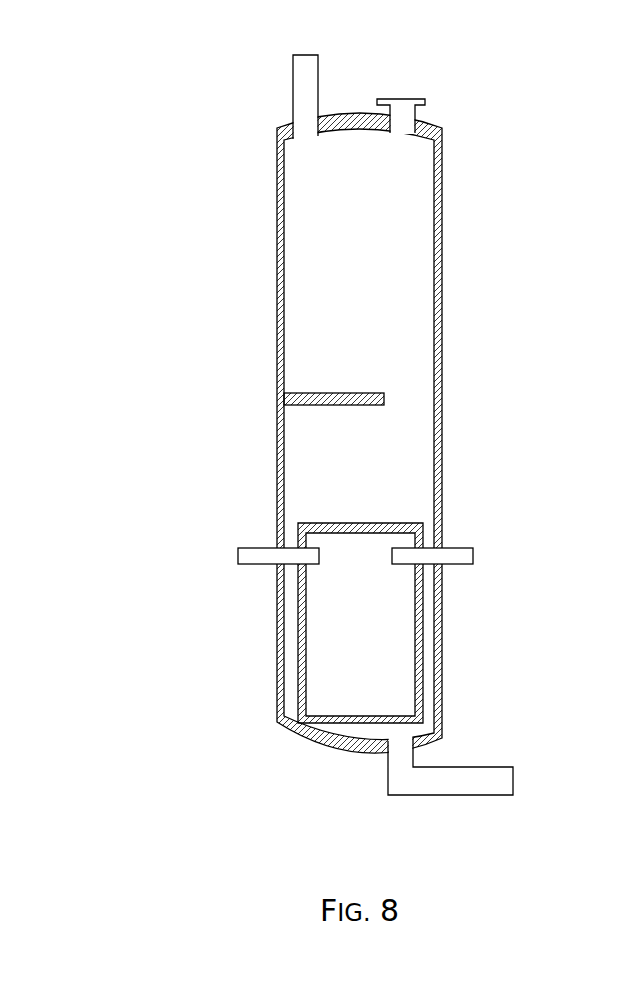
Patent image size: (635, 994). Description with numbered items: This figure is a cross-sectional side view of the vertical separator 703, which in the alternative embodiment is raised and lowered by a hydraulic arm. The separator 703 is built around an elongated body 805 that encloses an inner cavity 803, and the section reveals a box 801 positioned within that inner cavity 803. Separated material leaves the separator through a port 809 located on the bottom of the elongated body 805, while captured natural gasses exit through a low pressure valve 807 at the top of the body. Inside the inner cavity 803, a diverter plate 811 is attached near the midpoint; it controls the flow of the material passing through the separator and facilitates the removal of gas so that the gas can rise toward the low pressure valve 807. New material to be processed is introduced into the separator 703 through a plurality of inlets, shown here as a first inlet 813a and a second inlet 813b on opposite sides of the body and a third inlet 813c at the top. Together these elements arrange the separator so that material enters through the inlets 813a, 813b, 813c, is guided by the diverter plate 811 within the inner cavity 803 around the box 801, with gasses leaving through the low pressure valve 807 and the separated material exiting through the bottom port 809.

The vertical separator 703 is at (258, 392).
The box 801 is at (432, 627).
The inner cavity 803 is at (276, 438).
The elongated body 805 is at (279, 297).
The low pressure valve 807 is at (293, 77).
The port 809 is at (513, 783).
The diverter plate 811 is at (384, 398).
The inlet 813a is at (460, 548).
The inlet 813b is at (252, 565).
The inlet 813c is at (427, 100).